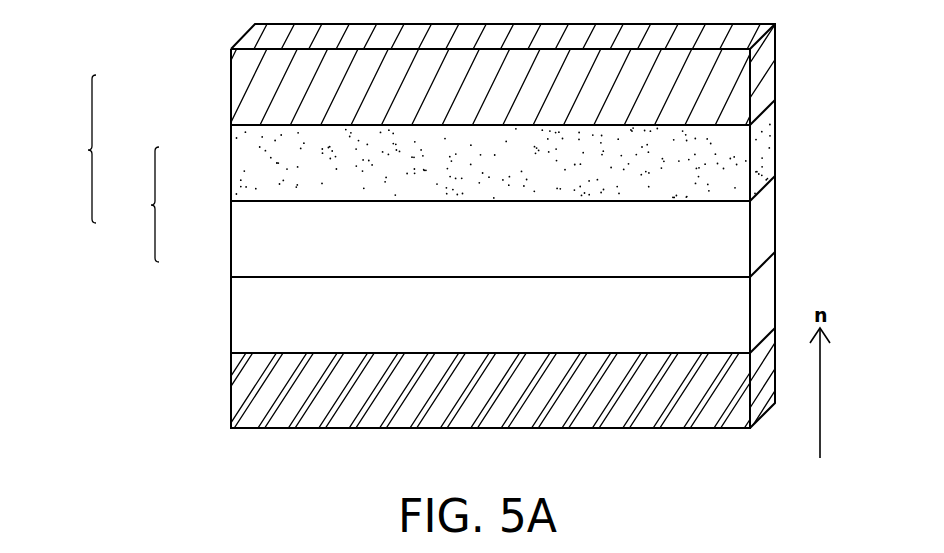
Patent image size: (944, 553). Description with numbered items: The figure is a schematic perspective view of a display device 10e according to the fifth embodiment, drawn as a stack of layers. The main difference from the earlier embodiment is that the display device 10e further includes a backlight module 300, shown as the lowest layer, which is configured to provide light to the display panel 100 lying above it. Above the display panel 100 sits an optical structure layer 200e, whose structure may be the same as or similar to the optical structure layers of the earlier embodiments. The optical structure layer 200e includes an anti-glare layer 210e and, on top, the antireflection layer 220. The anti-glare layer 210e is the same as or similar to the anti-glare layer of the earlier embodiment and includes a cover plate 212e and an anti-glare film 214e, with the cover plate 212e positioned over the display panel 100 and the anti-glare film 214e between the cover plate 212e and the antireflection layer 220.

The display device 10e is at (895, 455).
The optical structure layer 200e is at (64, 149).
The antireflection layer 220 is at (250, 85).
The anti-glare layer 210e is at (129, 204).
The anti-glare film 214e is at (250, 160).
The cover plate 212e is at (250, 237).
The display panel 100 is at (250, 312).
The backlight module 300 is at (250, 385).